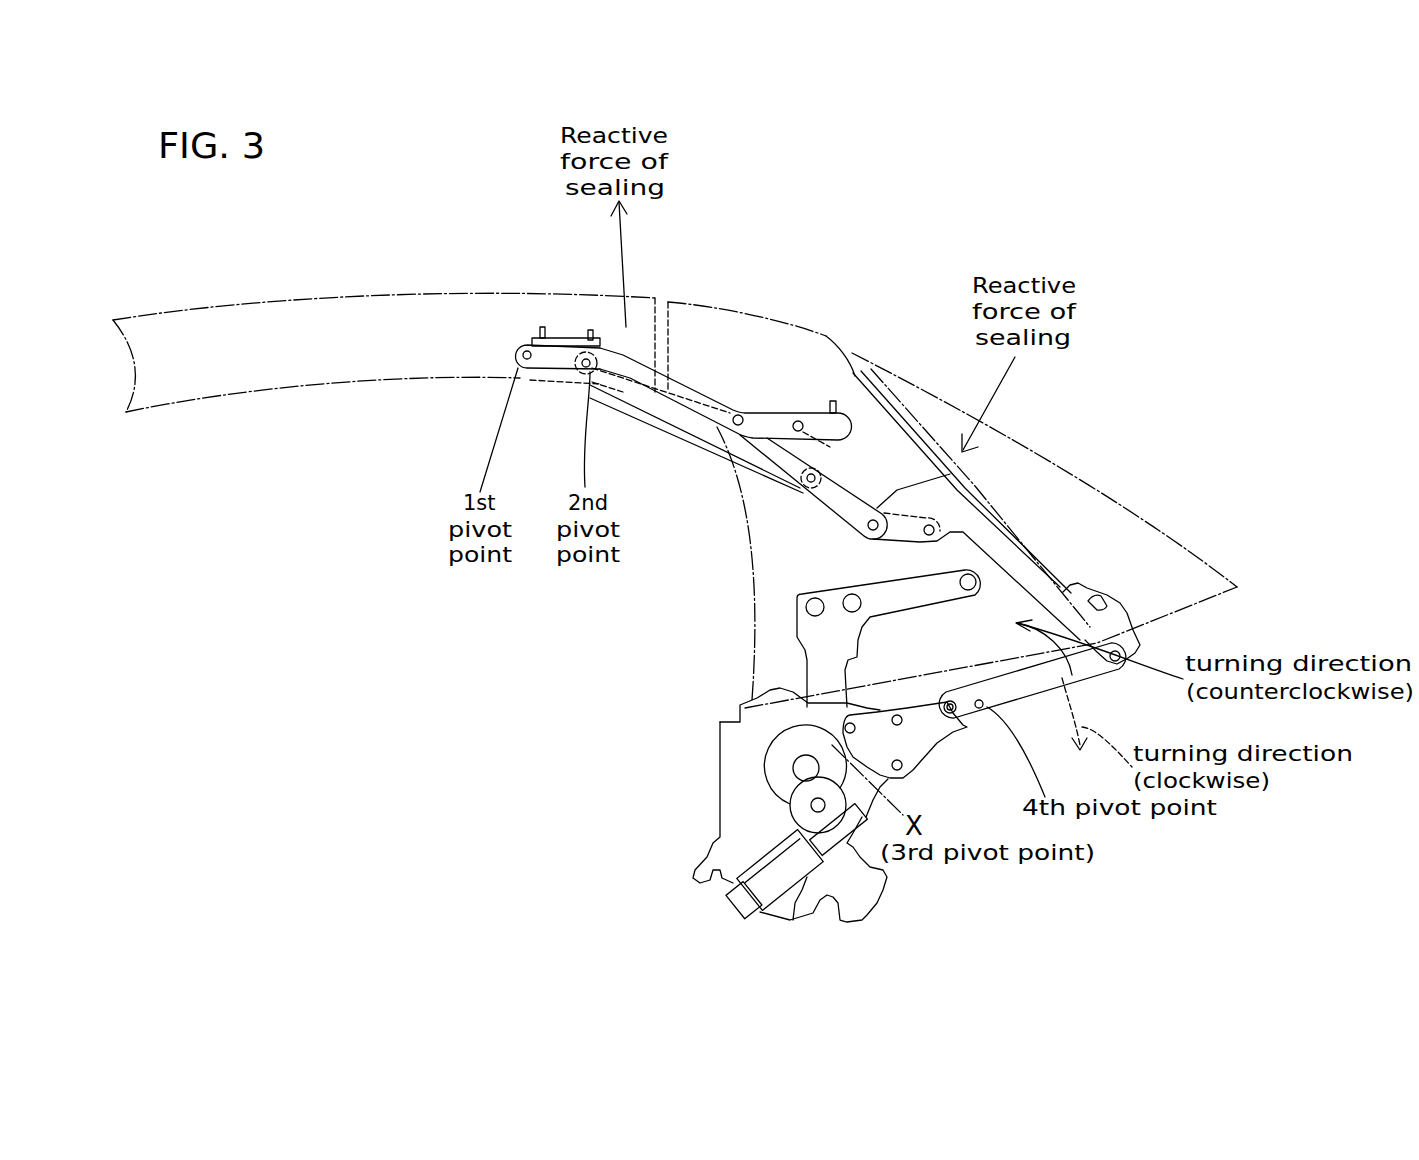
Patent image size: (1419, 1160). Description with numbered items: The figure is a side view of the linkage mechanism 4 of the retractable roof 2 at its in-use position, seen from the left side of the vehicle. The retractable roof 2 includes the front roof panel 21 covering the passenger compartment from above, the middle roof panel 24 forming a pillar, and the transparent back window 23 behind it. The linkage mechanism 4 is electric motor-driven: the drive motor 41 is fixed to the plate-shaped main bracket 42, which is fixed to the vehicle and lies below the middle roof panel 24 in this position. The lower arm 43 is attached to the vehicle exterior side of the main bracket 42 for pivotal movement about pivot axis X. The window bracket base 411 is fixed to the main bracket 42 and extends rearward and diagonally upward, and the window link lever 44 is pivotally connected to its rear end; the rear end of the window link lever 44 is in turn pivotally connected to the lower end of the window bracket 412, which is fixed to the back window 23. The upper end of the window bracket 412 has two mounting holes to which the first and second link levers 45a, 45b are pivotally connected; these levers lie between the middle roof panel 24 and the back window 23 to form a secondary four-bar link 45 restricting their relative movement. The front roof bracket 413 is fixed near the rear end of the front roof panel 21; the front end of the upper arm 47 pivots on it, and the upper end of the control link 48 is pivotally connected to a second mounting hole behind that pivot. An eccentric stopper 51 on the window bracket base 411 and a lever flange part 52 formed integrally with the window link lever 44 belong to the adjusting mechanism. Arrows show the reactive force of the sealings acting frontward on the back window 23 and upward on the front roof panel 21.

The retractable roof 2 is at (726, 206).
The front roof panel 21 is at (357, 290).
The back window 23 is at (1052, 462).
The middle roof panel 24 is at (767, 318).
The linkage mechanism 4 is at (668, 622).
The drive motor 41 is at (802, 914).
The main bracket 42 is at (720, 773).
The lower arm 43 is at (853, 677).
The window link lever 44 is at (1110, 678).
The secondary four-bar link 45 is at (915, 487).
The first link lever 45a is at (810, 487).
The second link lever 45b is at (870, 467).
The upper arm 47 is at (553, 360).
The control link 48 is at (668, 415).
The eccentric stopper 51 is at (957, 716).
The lever flange part 52 is at (953, 694).
The window bracket base 411 is at (925, 757).
The window bracket 412 is at (1132, 625).
The front roof bracket 413 is at (562, 338).